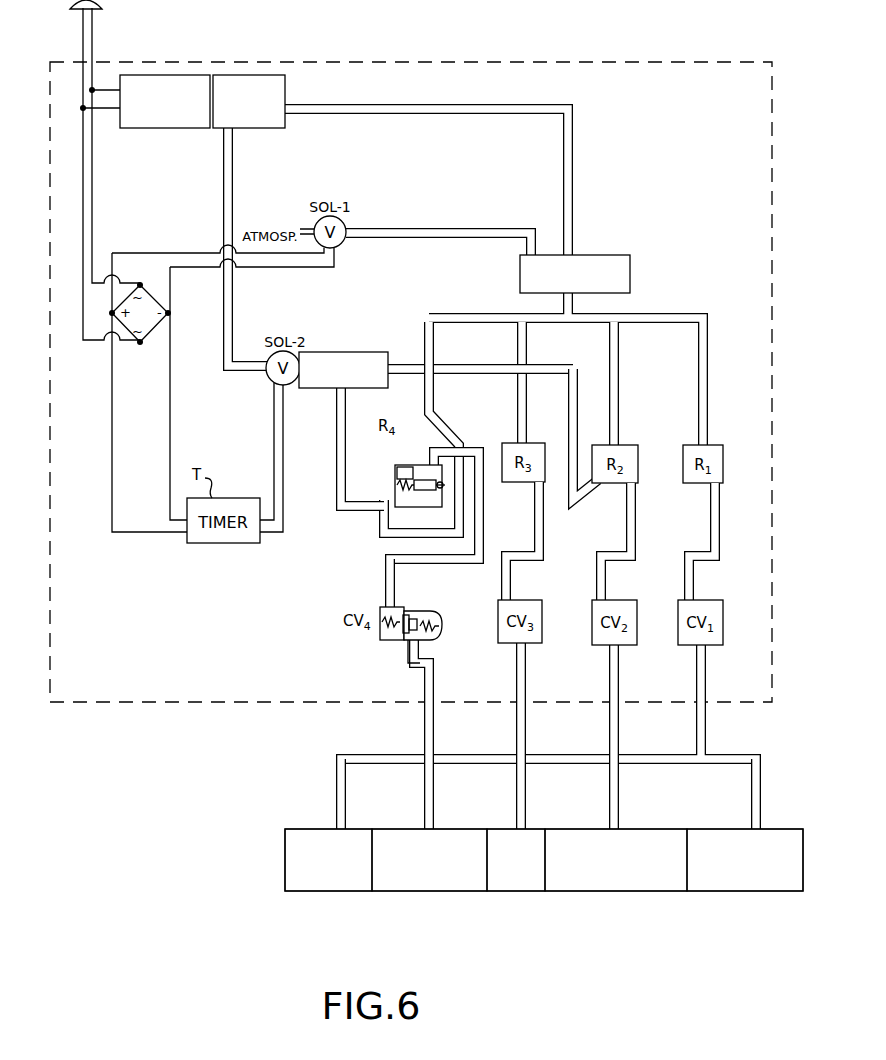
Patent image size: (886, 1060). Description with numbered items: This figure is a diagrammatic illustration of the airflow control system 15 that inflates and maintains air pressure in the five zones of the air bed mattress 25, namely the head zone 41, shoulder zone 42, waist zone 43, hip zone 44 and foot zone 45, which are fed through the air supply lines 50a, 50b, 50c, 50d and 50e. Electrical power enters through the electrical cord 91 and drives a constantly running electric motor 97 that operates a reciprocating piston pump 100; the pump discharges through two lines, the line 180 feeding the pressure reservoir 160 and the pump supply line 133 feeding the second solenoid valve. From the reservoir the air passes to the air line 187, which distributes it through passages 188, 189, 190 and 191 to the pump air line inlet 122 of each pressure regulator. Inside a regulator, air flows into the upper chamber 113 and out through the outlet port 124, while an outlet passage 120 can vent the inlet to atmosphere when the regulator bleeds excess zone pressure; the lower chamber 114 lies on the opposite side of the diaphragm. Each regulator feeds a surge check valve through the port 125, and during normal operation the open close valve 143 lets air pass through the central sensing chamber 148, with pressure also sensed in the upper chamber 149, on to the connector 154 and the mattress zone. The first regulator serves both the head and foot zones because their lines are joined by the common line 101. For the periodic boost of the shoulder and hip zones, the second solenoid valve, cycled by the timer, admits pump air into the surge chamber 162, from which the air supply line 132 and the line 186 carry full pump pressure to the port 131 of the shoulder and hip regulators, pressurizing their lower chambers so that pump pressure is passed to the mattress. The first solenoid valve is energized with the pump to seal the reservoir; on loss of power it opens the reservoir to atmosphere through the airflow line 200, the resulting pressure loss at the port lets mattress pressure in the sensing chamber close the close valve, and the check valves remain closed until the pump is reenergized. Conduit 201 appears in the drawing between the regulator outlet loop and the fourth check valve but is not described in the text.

The airflow control system 15 is at (136, 708).
The mattress 25 is at (262, 869).
The head zone 41 is at (333, 905).
The shoulder zone 42 is at (437, 905).
The waist zone 43 is at (520, 905).
The hip zone 44 is at (660, 908).
The foot zone 45 is at (747, 905).
The air supply line 50a is at (337, 804).
The air supply line 50b is at (424, 802).
The air supply line 50c is at (517, 792).
The air supply line 50d is at (620, 806).
The air supply line 50e is at (755, 812).
The electrical cord 91 is at (103, 21).
The electric motor 97 is at (166, 131).
The reciprocating piston pump 100 is at (287, 129).
The common line 101 is at (707, 737).
The upper chamber 113 is at (410, 466).
The lower chamber 114 is at (396, 487).
The outlet passage 120 is at (418, 465).
The pump air line inlet 122 is at (436, 492).
The outlet port 124 is at (435, 472).
The port 125 is at (386, 606).
The port 131 is at (616, 488).
The air supply line 132 is at (340, 476).
The pump supply line 133 is at (233, 196).
The close valve 143 is at (398, 631).
The central sensing chamber 148 is at (415, 637).
The upper chamber 149 is at (432, 608).
The connector 154 is at (428, 652).
The reservoir 160 is at (632, 258).
The surge chamber 162 is at (364, 352).
The line 180 is at (355, 106).
The line 186 is at (550, 364).
The air line 187 is at (577, 306).
The passage 188 is at (710, 372).
The passage 189 is at (618, 388).
The passage 190 is at (517, 356).
The passage 191 is at (440, 328).
The airflow line 200 is at (475, 229).
The conduit to check valve CV4 201 is at (386, 571).